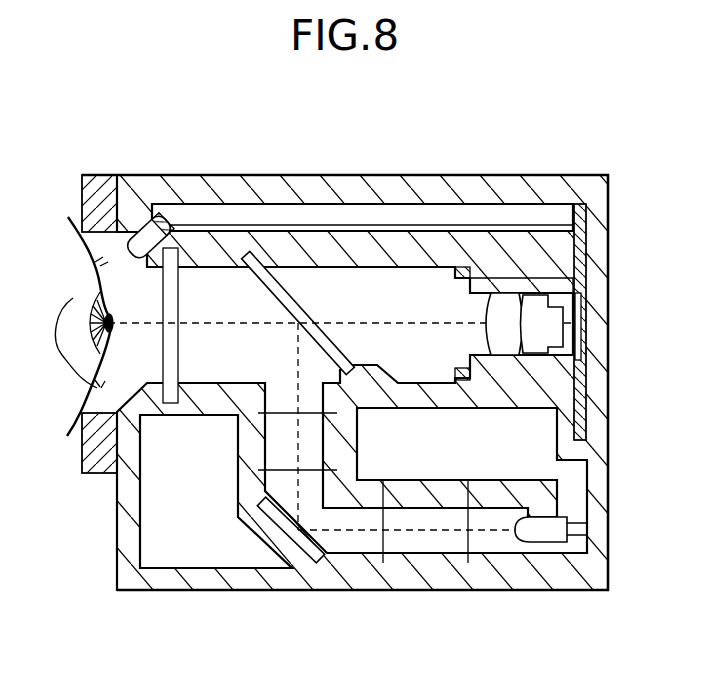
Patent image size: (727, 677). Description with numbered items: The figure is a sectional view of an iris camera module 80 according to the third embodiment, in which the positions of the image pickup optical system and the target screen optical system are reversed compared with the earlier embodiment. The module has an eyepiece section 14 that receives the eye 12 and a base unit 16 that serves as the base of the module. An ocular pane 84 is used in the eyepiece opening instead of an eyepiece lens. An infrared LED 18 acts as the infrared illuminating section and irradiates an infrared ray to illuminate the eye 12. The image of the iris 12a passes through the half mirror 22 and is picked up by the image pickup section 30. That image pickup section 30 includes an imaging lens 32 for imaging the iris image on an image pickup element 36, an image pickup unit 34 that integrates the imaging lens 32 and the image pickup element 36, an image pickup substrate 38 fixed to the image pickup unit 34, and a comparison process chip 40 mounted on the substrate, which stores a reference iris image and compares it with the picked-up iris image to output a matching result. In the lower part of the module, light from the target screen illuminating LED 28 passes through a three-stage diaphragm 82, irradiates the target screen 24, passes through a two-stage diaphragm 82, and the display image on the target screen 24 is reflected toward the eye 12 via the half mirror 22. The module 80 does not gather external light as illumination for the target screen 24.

The iris camera module 80 is at (622, 140).
The base unit 16 is at (333, 175).
The eyepiece section 14 is at (93, 173).
The infrared LED 18 is at (158, 173).
The eye 12 is at (73, 300).
The iris 12a is at (97, 387).
The half mirror 22 is at (290, 300).
The target screen 24 is at (318, 546).
The target screen illuminating LED 28 is at (547, 543).
The image pickup section 30 is at (471, 306).
The imaging lens 32 is at (490, 333).
The image pickup unit 34 is at (507, 277).
The image pickup element 36 is at (540, 352).
The image pickup substrate 38 is at (586, 267).
The comparison process chip 40 is at (582, 324).
The diaphragm 82 is at (333, 470).
The ocular pane 84 is at (180, 305).